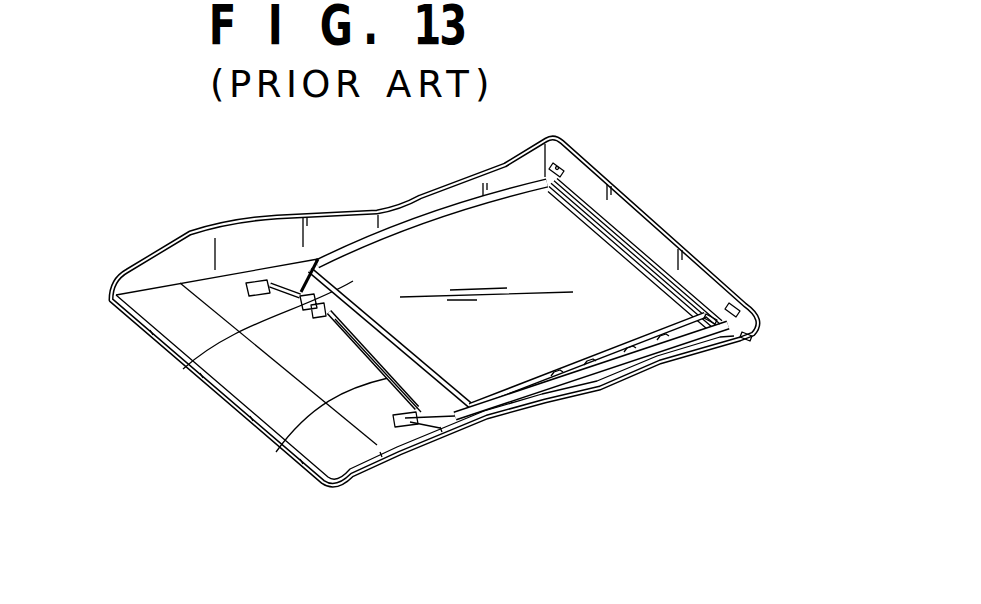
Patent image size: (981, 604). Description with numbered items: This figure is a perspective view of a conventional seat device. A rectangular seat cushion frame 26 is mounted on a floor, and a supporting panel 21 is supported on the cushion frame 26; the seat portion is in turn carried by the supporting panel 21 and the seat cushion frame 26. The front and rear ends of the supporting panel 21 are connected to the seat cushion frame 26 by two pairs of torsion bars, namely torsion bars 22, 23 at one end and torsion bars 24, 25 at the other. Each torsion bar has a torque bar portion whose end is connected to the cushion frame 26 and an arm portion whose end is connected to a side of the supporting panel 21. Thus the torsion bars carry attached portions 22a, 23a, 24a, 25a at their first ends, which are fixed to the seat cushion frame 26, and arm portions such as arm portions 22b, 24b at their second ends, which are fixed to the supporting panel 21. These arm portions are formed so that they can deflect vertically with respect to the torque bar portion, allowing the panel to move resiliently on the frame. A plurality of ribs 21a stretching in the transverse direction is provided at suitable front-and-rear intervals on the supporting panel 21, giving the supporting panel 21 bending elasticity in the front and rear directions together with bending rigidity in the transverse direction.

The supporting panel 21 is at (445, 250).
The ribs 21a is at (572, 383).
The torsion bar 22 is at (183, 368).
The attached portion 22a is at (246, 286).
The arm portion 22b is at (473, 412).
The torsion bar 23 is at (273, 455).
The attached portion 23a is at (398, 427).
The torsion bar 24 is at (602, 188).
The attached portion 24a is at (563, 164).
The arm portion 24b is at (713, 338).
The torsion bar 25 is at (734, 303).
The attached portion 25a is at (715, 314).
The seat cushion frame 26 is at (277, 218).